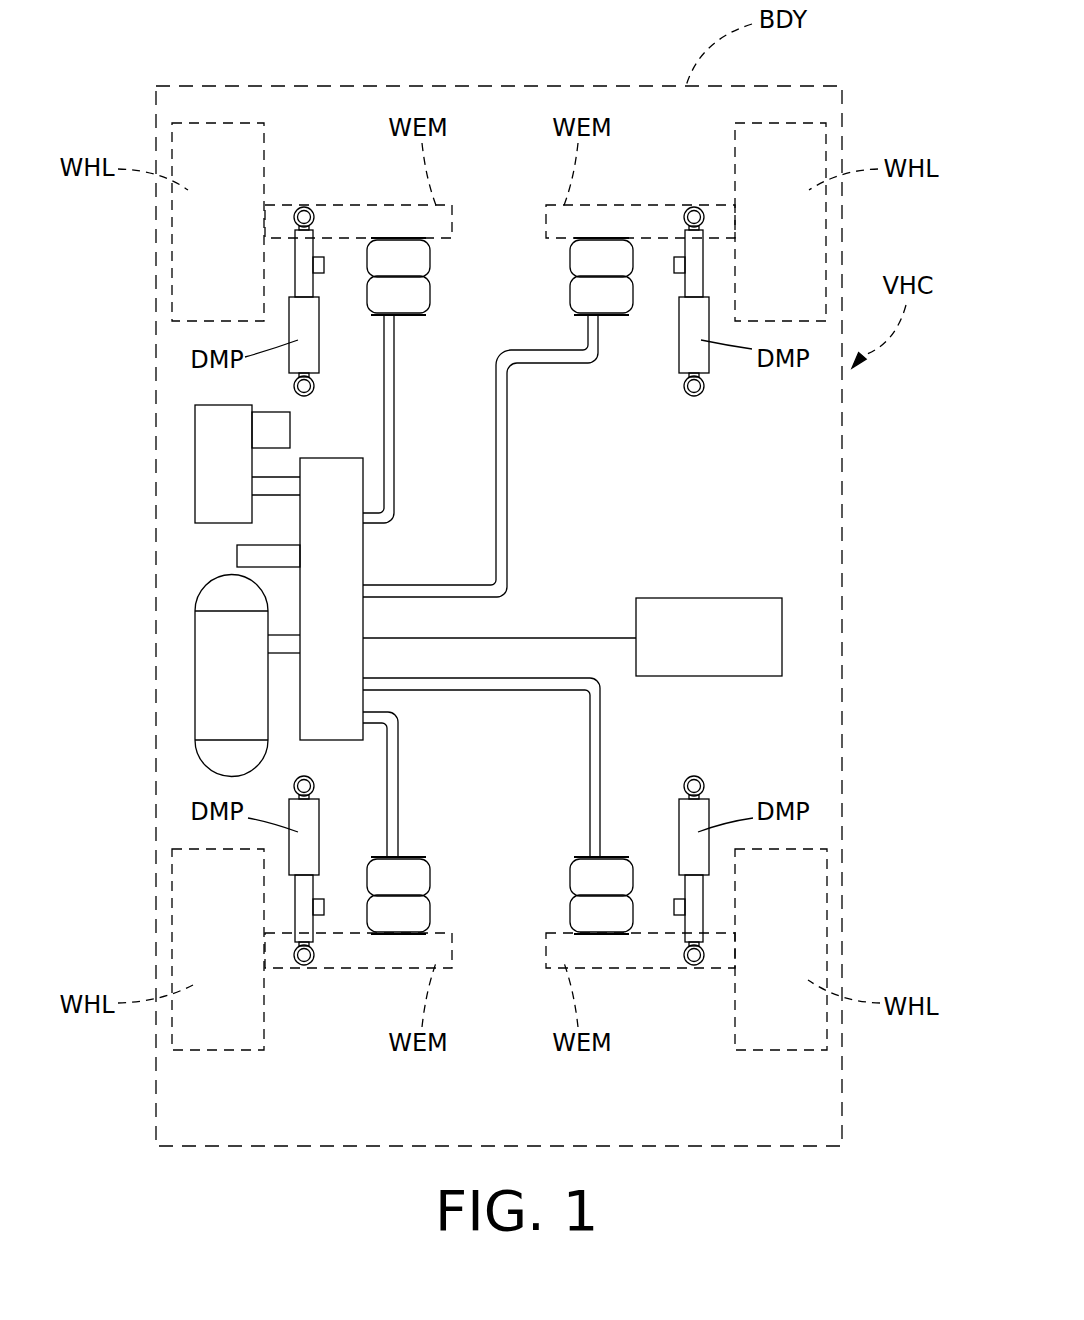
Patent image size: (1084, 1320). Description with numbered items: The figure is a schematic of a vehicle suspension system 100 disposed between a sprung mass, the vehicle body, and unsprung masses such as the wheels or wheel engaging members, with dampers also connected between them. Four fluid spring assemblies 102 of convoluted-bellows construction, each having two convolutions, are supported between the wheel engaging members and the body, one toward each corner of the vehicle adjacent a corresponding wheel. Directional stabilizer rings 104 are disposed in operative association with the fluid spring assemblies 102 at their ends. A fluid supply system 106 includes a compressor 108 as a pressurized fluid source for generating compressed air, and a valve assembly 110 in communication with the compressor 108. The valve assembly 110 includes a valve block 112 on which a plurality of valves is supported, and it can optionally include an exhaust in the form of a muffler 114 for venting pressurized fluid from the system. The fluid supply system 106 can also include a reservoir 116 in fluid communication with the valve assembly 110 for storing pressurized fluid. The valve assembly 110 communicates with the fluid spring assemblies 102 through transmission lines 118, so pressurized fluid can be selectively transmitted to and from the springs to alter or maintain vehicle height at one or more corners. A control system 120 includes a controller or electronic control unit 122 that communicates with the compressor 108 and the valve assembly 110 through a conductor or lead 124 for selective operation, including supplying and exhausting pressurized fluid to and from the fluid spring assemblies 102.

The suspension system 100 is at (804, 472).
The fluid spring assembly 102 is at (420, 260).
The directional stabilizer ring 104 is at (380, 238).
The fluid supply system 106 is at (282, 590).
The compressor 108 is at (207, 463).
The valve assembly 110 is at (394, 599).
The valve block 112 is at (333, 674).
The muffler 114 is at (237, 557).
The reservoir 116 is at (207, 677).
The transmission line 118 is at (388, 428).
The control system 120 is at (572, 590).
The controller 122 is at (709, 637).
The conductor or lead 124 is at (508, 636).